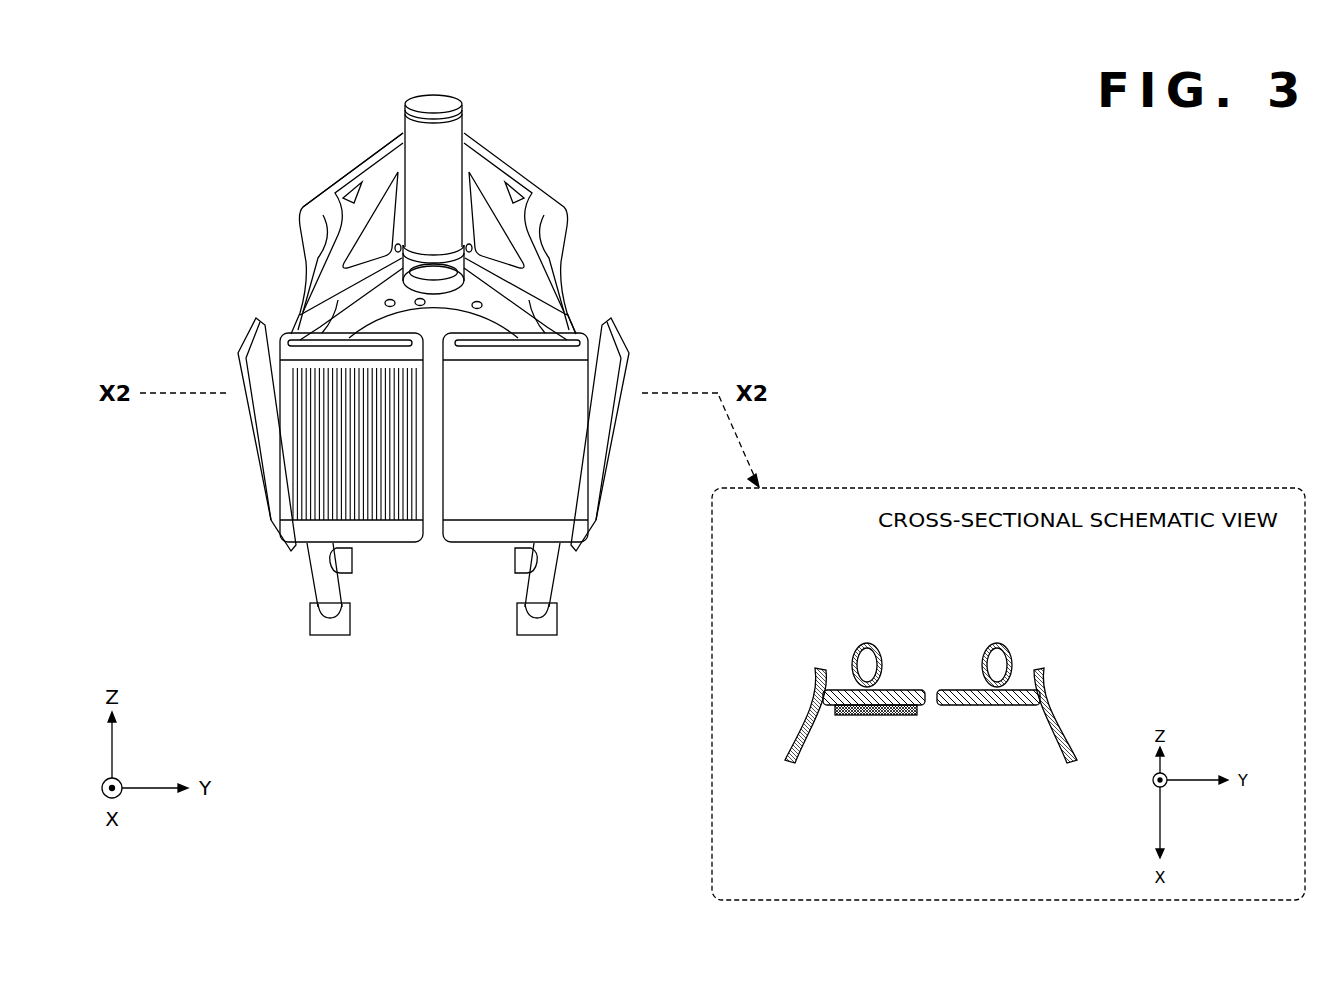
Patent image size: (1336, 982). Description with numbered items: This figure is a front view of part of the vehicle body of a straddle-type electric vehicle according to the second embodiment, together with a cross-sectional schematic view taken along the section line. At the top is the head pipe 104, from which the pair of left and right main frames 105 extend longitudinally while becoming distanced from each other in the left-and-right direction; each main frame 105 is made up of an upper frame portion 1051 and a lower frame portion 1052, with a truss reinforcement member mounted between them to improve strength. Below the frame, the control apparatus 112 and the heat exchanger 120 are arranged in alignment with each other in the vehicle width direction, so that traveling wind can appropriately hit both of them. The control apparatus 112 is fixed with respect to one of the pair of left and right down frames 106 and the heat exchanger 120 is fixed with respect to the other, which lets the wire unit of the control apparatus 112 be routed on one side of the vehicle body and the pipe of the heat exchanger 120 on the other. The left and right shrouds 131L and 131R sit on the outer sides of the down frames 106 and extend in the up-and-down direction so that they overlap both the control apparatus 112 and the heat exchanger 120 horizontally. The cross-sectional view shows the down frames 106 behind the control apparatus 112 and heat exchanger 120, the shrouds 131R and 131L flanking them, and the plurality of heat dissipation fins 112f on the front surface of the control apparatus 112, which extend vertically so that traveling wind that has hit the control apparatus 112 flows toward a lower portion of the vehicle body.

The head pipe 104 is at (408, 122).
The main frame 105 is at (677, 162).
The upper frame portion 1051 is at (553, 197).
The lower frame portion 1052 is at (575, 320).
The control apparatus 112 is at (389, 545).
The heat dissipation fins 112f is at (325, 478).
The heat exchanger 120 is at (476, 545).
The right shroud 131R is at (242, 340).
The left shroud 131L is at (627, 348).
The down frame 106 is at (866, 643).